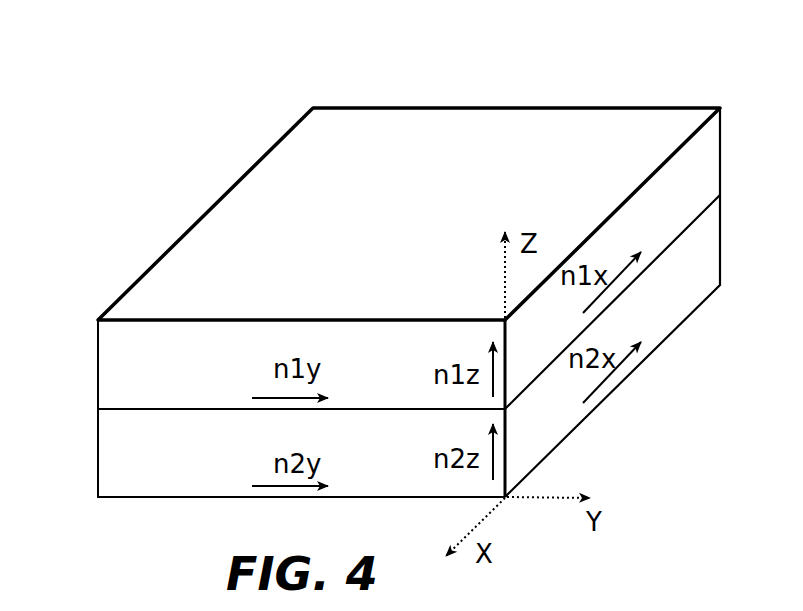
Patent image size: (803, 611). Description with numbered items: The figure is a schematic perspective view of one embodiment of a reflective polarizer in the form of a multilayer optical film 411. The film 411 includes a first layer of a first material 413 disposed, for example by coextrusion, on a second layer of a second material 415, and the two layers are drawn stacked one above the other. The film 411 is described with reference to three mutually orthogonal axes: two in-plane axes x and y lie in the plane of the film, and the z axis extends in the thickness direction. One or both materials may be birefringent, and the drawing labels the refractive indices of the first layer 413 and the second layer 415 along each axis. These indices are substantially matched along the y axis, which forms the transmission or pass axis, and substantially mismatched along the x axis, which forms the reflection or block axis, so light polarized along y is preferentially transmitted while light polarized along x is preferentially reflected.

The multilayer optical film 411 is at (487, 104).
The first layer of a first material 413 is at (118, 365).
The second layer of a second material 415 is at (120, 457).